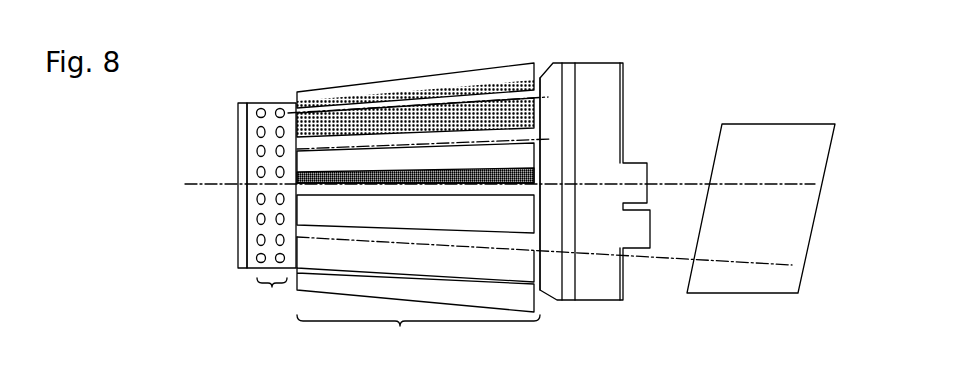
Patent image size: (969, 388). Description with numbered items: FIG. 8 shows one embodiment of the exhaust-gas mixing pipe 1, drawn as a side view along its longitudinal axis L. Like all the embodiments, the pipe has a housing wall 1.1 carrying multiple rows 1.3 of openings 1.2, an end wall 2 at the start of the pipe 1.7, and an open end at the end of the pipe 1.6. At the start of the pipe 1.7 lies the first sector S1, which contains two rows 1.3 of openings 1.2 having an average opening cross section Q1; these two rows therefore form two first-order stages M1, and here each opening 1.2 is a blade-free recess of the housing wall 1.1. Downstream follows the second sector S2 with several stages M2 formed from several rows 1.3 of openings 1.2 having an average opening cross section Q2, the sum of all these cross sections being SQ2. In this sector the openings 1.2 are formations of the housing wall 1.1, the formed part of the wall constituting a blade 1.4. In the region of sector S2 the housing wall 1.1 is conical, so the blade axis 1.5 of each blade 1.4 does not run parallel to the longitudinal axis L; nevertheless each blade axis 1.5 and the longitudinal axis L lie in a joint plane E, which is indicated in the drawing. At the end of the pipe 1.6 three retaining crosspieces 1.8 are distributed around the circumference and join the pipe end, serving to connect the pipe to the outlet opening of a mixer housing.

The exhaust-gas mixing pipe 1 is at (431, 47).
The housing wall 1.1 is at (610, 116).
The openings 1.2 is at (258, 131).
The rows 1.3 is at (353, 89).
The blade 1.4 is at (482, 168).
The blade axis 1.5 is at (436, 147).
The end of the pipe 1.6 is at (627, 110).
The start of the pipe 1.7 is at (235, 245).
The retaining crosspieces 1.8 is at (620, 63).
The end wall 2 is at (240, 133).
The first-order stages M1 is at (260, 34).
The average opening cross section Q1 is at (292, 34).
The stages M2 is at (370, 43).
The average opening cross section Q2 is at (402, 43).
The first sector S1 is at (272, 287).
The second sector S2 is at (400, 326).
The sum of all the opening cross sections Q2 SQ2 is at (398, 361).
The longitudinal axis L is at (700, 186).
The joint plane E is at (802, 170).